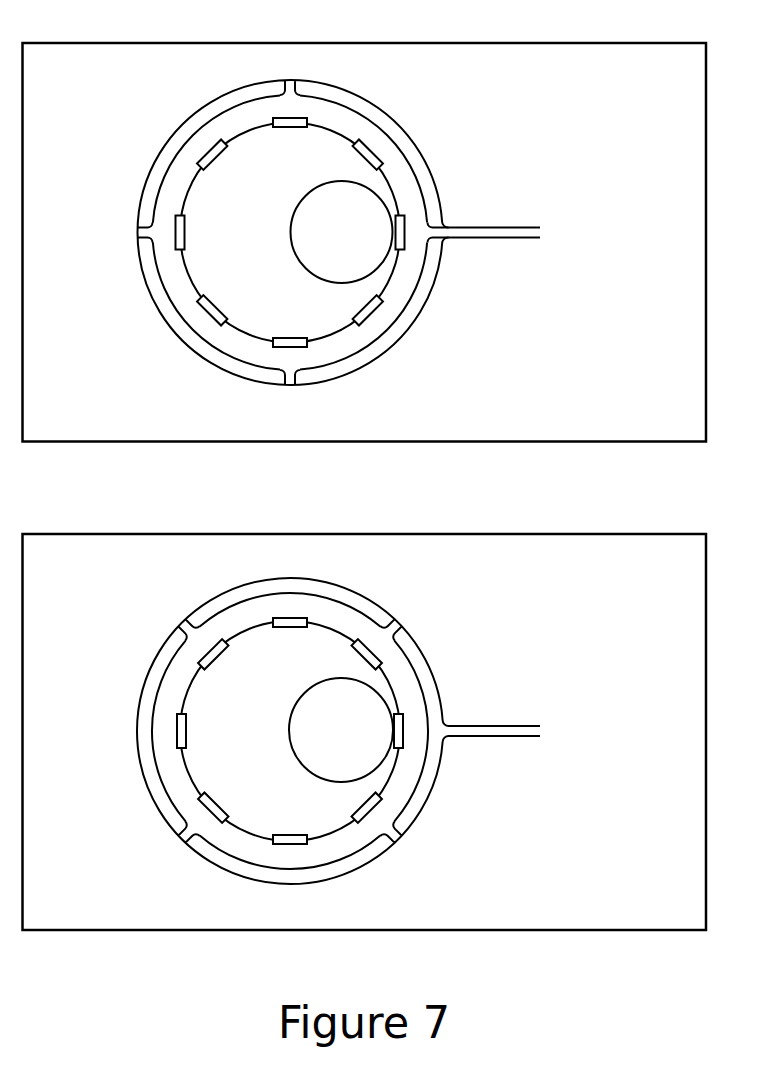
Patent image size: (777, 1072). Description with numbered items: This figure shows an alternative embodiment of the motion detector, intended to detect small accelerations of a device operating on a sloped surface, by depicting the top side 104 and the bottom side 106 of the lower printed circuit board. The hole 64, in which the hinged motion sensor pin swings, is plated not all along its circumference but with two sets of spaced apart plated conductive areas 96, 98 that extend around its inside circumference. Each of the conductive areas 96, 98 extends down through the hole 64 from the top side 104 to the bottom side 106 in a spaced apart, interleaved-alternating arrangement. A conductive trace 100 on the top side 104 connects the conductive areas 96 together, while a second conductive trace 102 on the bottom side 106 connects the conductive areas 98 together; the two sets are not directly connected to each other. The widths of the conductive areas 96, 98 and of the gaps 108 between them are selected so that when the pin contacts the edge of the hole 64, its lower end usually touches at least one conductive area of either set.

The hole 64 is at (256, 311).
The conductive areas 96 is at (220, 305).
The conductive areas 98 is at (364, 657).
The conductive trace 100 is at (461, 227).
The second conductive trace 102 is at (468, 724).
The top side 104 is at (365, 242).
The bottom side 106 is at (365, 732).
The gaps 108 is at (353, 814).